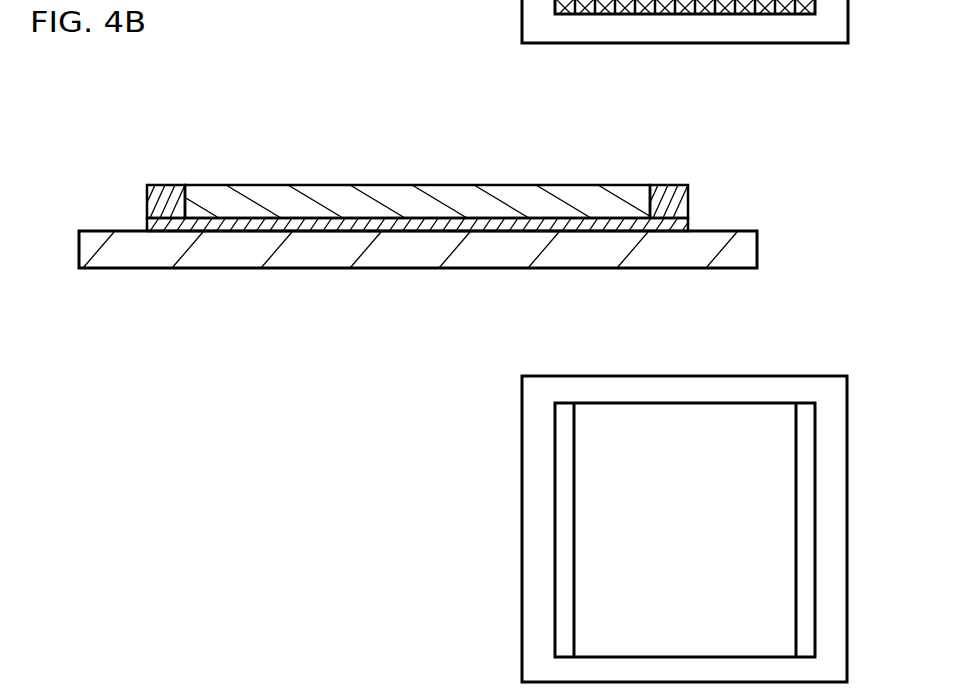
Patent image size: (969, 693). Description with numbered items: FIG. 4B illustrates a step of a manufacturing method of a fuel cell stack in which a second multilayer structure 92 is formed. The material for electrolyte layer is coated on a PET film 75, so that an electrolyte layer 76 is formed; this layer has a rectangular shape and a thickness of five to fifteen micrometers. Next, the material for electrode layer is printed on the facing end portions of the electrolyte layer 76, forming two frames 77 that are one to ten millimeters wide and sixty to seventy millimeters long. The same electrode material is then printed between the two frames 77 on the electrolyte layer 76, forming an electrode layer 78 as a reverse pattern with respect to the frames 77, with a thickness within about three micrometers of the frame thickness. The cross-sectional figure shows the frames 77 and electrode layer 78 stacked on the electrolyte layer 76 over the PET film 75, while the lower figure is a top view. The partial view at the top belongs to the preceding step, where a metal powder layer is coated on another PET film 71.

The second multilayer structure 92 is at (216, 118).
The PET film 71 is at (845, 27).
The PET film 75 is at (752, 245).
The electrolyte layer 76 is at (690, 222).
The frames 77 is at (683, 190).
The electrode layer 78 is at (607, 203).